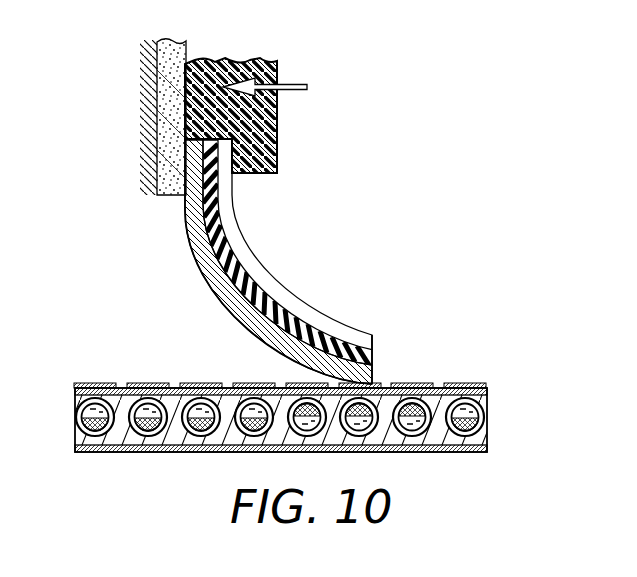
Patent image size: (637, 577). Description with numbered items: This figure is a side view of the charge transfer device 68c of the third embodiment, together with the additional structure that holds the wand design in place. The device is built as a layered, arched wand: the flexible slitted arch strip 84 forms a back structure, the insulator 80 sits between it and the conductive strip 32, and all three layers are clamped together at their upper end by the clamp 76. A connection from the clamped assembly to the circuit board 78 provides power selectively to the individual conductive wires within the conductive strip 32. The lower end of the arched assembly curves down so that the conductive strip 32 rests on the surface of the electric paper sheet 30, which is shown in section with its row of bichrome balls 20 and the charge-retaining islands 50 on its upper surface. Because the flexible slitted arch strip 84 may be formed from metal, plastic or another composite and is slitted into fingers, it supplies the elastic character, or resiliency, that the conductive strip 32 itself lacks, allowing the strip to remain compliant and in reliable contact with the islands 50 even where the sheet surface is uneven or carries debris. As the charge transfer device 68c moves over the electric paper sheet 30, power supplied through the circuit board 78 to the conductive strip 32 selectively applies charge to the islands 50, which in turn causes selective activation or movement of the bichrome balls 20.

The bichrome balls 20 is at (478, 415).
The electric paper sheet 30 is at (148, 354).
The conductive strip 32 is at (224, 300).
The charge-retaining islands 50 is at (297, 383).
The charge transfer device 68c is at (381, 207).
The clamp 76 is at (276, 133).
The circuit board 78 is at (187, 49).
The insulator 80 is at (374, 353).
The flexible slitted arch strip 84 is at (281, 311).